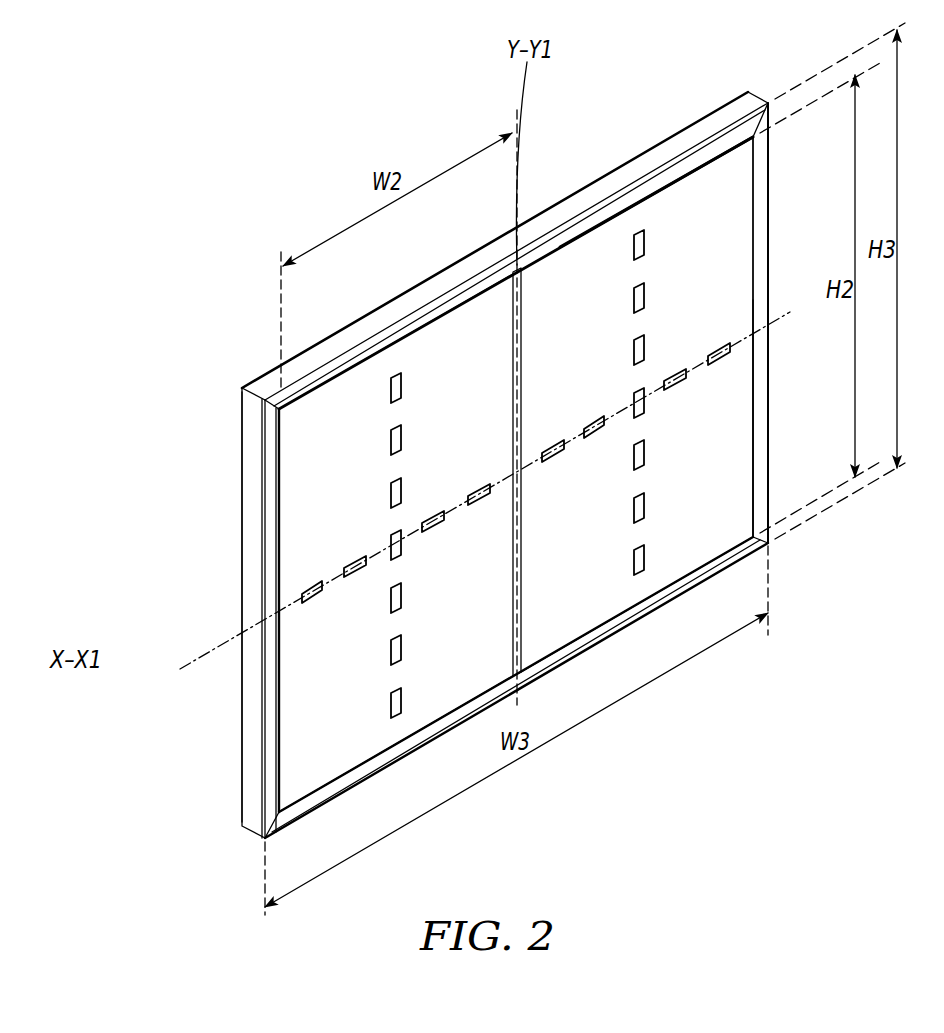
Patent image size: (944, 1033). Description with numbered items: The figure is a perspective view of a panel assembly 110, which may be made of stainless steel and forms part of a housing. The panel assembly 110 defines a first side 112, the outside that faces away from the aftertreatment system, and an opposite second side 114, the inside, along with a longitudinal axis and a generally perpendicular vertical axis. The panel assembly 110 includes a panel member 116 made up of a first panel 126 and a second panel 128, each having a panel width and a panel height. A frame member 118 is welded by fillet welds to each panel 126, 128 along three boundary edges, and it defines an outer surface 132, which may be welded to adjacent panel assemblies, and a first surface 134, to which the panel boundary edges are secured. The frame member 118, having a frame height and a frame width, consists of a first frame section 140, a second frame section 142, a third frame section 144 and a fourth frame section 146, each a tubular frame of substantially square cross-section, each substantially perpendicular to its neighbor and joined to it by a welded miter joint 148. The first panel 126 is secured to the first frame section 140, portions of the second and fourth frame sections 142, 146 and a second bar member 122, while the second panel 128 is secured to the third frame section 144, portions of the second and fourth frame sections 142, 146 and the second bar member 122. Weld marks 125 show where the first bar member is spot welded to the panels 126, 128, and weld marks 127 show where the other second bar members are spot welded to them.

The panel assembly 110 is at (763, 82).
The first side 112 is at (722, 470).
The second side 114 is at (242, 376).
The panel member 116 is at (722, 186).
The frame member 118 is at (776, 236).
The second bar member 122 is at (521, 290).
The weld marks 125 is at (358, 562).
The first panel 126 is at (320, 490).
The weld marks 127 is at (405, 590).
The second panel 128 is at (712, 207).
The outer surface 132 is at (322, 353).
The first surface 134 is at (272, 762).
The first frame section 140 is at (243, 690).
The second frame section 142 is at (612, 217).
The third frame section 144 is at (770, 373).
The fourth frame section 146 is at (447, 746).
The miter joint 148 is at (272, 838).